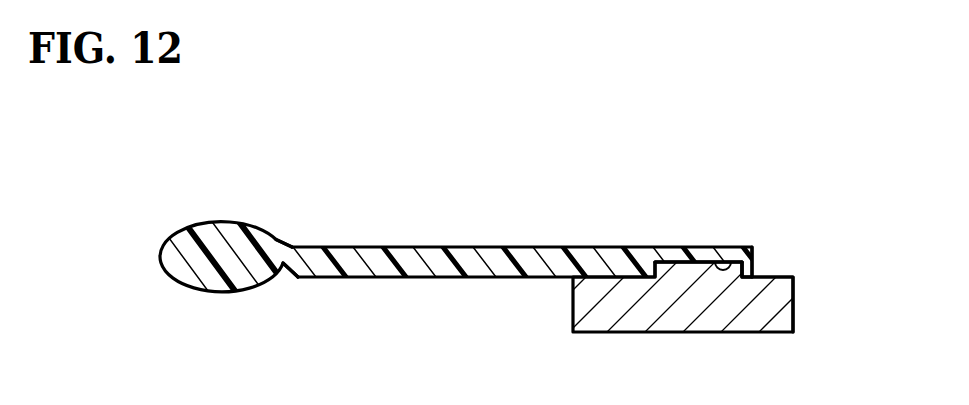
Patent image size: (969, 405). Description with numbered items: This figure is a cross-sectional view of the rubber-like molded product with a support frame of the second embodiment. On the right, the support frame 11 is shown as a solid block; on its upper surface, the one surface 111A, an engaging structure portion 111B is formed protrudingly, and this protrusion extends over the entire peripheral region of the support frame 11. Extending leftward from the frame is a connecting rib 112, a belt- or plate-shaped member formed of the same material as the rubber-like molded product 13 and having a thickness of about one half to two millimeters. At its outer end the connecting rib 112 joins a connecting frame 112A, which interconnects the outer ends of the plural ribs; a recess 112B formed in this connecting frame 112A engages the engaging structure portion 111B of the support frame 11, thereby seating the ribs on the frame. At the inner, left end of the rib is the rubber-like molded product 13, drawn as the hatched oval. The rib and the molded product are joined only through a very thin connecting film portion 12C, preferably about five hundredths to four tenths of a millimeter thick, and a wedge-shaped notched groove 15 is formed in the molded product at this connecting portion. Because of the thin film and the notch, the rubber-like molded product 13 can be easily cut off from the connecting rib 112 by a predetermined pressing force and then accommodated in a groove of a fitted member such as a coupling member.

The support frame 11 is at (578, 310).
The one surface 111A is at (795, 269).
The engaging structure portion 111B is at (742, 261).
The connecting rib 112 is at (503, 243).
The connecting frame 112A is at (690, 250).
The recess 112B is at (728, 261).
The connecting film portion 12C is at (290, 246).
The rubber-like molded product 13 is at (215, 228).
The wedge-shaped notched groove 15 is at (288, 264).